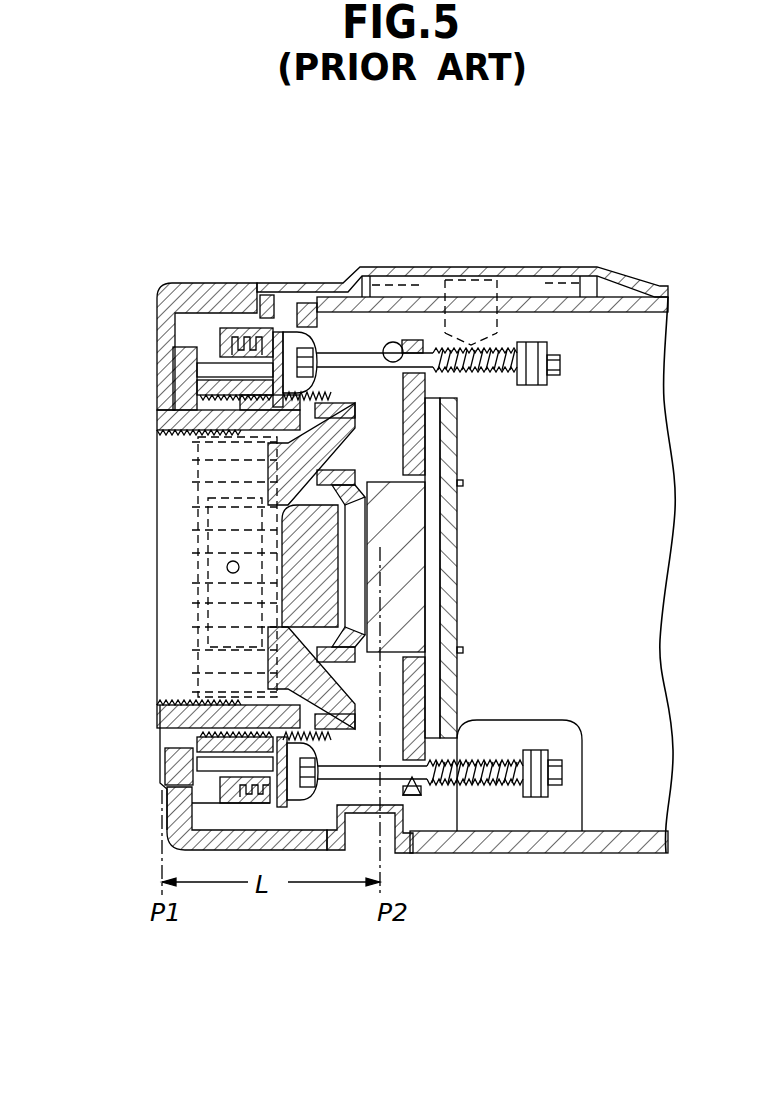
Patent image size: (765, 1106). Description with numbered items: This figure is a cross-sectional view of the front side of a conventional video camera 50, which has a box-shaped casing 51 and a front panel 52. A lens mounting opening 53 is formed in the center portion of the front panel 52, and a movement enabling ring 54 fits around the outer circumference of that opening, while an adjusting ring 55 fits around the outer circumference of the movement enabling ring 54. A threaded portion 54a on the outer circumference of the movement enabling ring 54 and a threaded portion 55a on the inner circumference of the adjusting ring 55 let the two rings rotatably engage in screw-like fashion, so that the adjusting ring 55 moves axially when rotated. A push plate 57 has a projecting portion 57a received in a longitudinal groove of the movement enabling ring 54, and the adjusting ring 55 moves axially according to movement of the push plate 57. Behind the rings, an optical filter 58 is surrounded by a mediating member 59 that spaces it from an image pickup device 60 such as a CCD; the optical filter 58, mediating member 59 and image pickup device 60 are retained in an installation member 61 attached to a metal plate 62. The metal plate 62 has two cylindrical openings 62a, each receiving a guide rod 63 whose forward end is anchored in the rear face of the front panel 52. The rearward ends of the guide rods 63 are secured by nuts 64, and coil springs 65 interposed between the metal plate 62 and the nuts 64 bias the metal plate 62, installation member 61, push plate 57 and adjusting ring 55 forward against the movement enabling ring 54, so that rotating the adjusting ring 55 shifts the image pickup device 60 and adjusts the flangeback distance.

The video camera 50 is at (577, 870).
The box-shaped casing 51 is at (600, 305).
The front panel 52 is at (177, 308).
The lens mounting opening 53 is at (165, 420).
The movement enabling ring 54 is at (262, 403).
The threaded portion 54a is at (255, 733).
The adjusting ring 55 is at (230, 403).
The threaded portion 55a is at (237, 725).
The push plate 57 is at (215, 395).
The projecting portion 57a is at (293, 345).
The optical filter 58 is at (283, 595).
The mediating member 59 is at (277, 521).
The image pickup device 60 is at (397, 570).
The installation member 61 is at (403, 447).
The metal plate 62 is at (408, 477).
The cylindrical opening 62a is at (395, 350).
The guide rod 63 is at (368, 340).
The nut 64 is at (540, 347).
The coil spring 65 is at (497, 373).